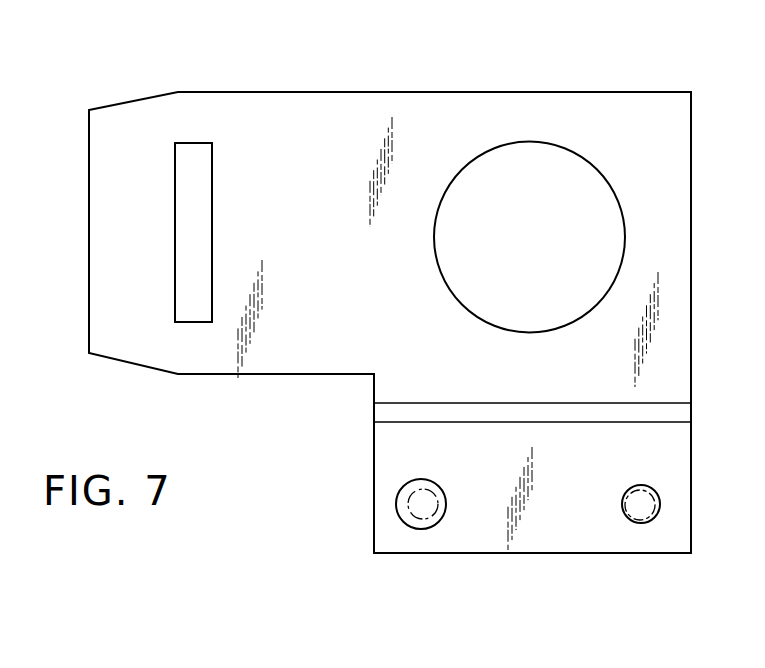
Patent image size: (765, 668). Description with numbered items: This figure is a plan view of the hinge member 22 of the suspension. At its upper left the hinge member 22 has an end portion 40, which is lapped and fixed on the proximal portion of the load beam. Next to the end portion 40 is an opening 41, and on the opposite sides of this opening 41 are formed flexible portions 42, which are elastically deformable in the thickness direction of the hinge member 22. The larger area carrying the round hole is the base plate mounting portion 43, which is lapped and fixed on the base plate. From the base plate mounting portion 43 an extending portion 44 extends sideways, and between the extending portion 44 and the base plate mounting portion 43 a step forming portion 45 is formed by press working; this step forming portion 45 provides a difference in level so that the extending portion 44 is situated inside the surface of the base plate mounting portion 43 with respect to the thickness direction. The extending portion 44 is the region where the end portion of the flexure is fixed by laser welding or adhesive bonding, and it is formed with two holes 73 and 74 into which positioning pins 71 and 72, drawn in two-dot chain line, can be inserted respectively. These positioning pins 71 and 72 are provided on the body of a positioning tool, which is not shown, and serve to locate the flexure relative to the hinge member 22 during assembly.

The hinge member 22 is at (352, 93).
The end portion 40 is at (98, 239).
The opening 41 is at (205, 205).
The flexible portions 42 is at (203, 103).
The base plate mounting portion 43 is at (463, 107).
The extending portion 44 is at (542, 535).
The step forming portion 45 is at (561, 410).
The positioning pin 71 is at (632, 490).
The positioning pin 72 is at (435, 500).
The hole 73 is at (643, 520).
The hole 74 is at (425, 525).